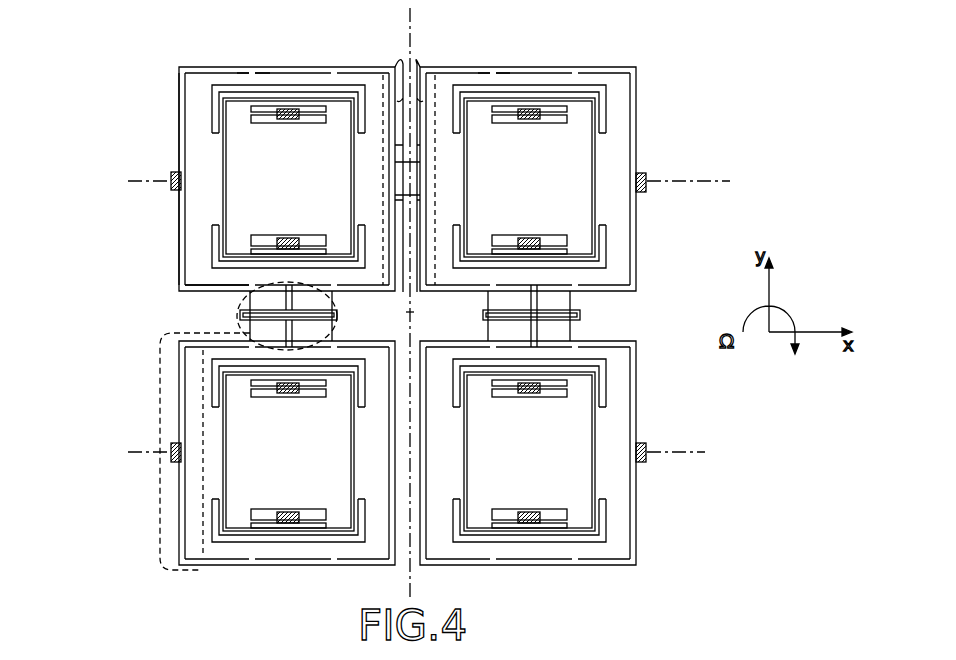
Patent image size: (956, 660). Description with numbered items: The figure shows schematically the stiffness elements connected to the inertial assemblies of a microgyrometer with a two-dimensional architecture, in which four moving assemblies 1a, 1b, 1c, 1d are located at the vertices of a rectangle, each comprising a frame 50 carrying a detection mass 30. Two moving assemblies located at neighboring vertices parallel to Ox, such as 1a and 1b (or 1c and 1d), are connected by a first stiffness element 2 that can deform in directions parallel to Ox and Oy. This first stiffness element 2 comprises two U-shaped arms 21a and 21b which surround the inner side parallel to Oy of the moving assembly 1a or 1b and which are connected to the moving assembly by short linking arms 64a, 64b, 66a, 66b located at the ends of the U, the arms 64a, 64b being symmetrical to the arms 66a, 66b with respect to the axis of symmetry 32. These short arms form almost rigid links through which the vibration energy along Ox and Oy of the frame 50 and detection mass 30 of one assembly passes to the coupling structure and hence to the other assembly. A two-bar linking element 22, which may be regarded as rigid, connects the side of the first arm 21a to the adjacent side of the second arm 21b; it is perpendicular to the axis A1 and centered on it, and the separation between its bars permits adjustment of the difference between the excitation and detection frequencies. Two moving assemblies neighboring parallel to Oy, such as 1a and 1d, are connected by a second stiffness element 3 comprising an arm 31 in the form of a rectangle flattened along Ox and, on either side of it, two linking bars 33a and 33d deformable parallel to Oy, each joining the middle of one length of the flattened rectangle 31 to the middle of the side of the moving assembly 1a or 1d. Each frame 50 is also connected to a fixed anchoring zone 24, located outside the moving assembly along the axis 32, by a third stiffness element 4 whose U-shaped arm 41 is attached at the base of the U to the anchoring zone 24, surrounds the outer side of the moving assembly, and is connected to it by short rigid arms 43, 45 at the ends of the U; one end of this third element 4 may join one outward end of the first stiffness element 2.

The moving assembly 1a is at (224, 156).
The moving assembly 1b is at (581, 159).
The moving assembly 1c is at (665, 486).
The moving assembly 1d is at (135, 487).
The first stiffness element 2 is at (413, 301).
The second stiffness element 3 is at (245, 313).
The third stiffness element 4 is at (160, 418).
The U-shaped arm 21a is at (393, 67).
The U-shaped arm 21b is at (423, 64).
The two-bar linking element 22 is at (420, 193).
The anchoring zone 24 is at (176, 184).
The detection mass 30 is at (239, 152).
The arm 31 is at (240, 316).
The axis of symmetry 32 is at (694, 179).
The linking bar 33a is at (287, 289).
The linking bar 33d is at (288, 344).
The U-shaped arm 41 is at (180, 229).
The short rigid arm 43 is at (248, 72).
The short rigid arm 45 is at (250, 287).
The frame 50 is at (199, 157).
The short linking arm 64a is at (327, 70).
The short linking arm 64b is at (492, 69).
The short linking arm 66a is at (332, 293).
The short linking arm 66b is at (493, 293).
The axis A1 is at (415, 33).